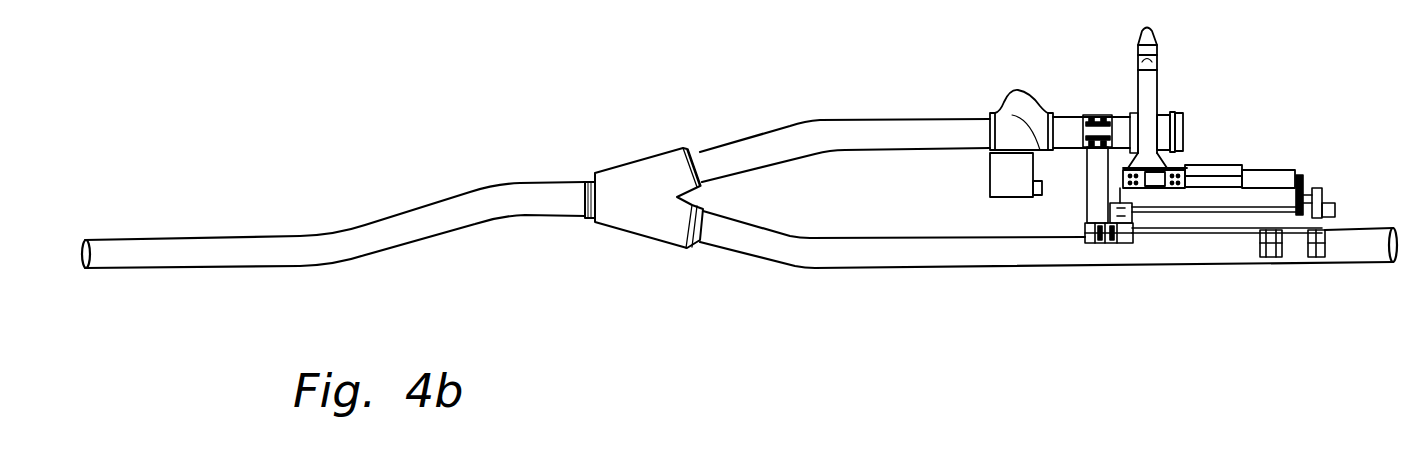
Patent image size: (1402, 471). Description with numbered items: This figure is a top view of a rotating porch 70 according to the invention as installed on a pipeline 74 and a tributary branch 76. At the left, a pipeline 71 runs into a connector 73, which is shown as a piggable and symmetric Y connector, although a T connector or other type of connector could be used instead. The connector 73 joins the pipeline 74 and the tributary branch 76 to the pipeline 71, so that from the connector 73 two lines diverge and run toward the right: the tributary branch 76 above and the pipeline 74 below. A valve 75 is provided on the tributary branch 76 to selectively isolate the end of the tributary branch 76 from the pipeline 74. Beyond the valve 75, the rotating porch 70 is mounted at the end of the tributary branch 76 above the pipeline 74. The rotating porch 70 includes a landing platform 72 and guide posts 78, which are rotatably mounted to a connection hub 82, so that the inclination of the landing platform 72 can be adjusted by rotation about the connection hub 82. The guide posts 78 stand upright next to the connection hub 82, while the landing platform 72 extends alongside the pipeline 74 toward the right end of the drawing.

The rotating porch 70 is at (1295, 87).
The pipeline 71 is at (226, 236).
The landing platform 72 is at (1277, 166).
The connector 73 is at (645, 160).
The pipeline 74 is at (880, 269).
The valve 75 is at (1012, 93).
The tributary branch 76 is at (872, 118).
The guide posts 78 is at (1159, 78).
The connection hub 82 is at (1184, 130).